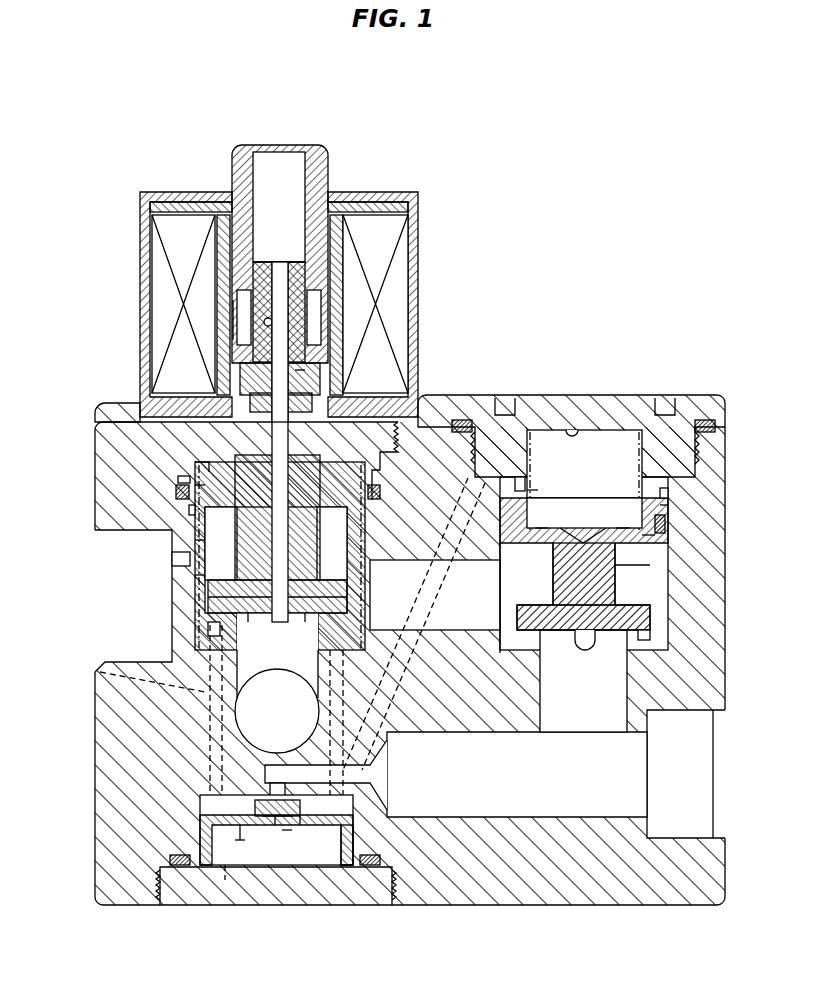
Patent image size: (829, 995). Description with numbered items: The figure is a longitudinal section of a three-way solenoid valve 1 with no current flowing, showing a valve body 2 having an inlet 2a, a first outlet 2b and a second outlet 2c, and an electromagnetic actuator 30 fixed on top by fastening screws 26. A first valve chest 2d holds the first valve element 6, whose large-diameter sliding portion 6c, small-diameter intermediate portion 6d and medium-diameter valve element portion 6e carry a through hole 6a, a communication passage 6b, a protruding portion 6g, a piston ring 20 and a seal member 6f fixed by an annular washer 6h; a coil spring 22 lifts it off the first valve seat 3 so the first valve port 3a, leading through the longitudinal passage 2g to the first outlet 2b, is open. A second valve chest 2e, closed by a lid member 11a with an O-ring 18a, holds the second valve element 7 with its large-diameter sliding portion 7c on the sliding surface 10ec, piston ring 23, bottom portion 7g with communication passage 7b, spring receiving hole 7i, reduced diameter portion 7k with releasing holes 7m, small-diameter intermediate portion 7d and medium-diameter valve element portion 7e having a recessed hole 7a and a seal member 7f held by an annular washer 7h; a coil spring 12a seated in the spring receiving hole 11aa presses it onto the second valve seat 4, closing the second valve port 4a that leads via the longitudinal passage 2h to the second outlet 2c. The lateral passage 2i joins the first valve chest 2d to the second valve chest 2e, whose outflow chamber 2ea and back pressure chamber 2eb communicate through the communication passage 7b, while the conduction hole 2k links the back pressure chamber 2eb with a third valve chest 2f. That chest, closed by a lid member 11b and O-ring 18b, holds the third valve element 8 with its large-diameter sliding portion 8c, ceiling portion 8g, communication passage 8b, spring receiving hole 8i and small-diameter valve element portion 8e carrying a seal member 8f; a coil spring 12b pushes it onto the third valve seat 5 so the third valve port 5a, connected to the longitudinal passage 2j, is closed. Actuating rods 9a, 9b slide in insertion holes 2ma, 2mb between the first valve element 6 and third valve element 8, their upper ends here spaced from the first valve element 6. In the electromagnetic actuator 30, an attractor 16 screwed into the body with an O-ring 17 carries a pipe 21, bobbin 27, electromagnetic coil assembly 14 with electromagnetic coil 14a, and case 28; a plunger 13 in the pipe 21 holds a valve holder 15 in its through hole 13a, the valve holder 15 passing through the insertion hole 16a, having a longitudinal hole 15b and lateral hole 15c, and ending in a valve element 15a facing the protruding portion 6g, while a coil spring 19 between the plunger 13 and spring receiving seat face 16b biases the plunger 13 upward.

The three-way solenoid valve 1 is at (662, 130).
The valve body 2 is at (715, 452).
The inlet 2a is at (170, 650).
The first outlet 2b is at (218, 757).
The second outlet 2c is at (705, 838).
The first valve chest 2d is at (186, 560).
The second valve chest 2e is at (658, 560).
The outflow chamber 2ea is at (628, 566).
The back pressure chamber 2eb is at (600, 458).
The third valve chest 2f is at (232, 806).
The longitudinal passage 2g is at (255, 672).
The longitudinal passage 2h is at (548, 712).
The lateral passage 2i is at (503, 566).
The longitudinal passage 2j is at (287, 777).
The conduction hole 2k is at (447, 590).
The insertion hole 2ma is at (100, 672).
The insertion hole 2mb is at (392, 762).
The first valve seat 3 is at (212, 594).
The first valve port 3a is at (226, 583).
The second valve seat 4 is at (600, 622).
The second valve port 4a is at (553, 602).
The third valve seat 5 is at (262, 795).
The third valve port 5a is at (282, 818).
The first valve element 6 is at (280, 556).
The through hole 6a is at (303, 526).
The communication passage 6b is at (220, 510).
The large-diameter sliding portion 6c is at (200, 488).
The small-diameter intermediate portion 6d is at (200, 542).
The medium-diameter valve element portion 6e is at (205, 577).
The seal member 6f is at (290, 616).
The protruding portion 6g is at (197, 466).
The annular washer 6h is at (250, 622).
The second valve element 7 is at (584, 564).
The recessed hole 7a is at (585, 642).
The communication passage 7b is at (622, 527).
The large-diameter sliding portion 7c is at (668, 512).
The small-diameter intermediate portion 7d is at (662, 617).
The medium-diameter valve element portion 7e is at (652, 630).
The seal member 7f is at (640, 642).
The bottom portion 7g is at (652, 534).
The annular washer 7h is at (620, 640).
The spring receiving hole 7i is at (540, 526).
The reduced diameter portion 7k is at (530, 492).
The releasing holes 7m is at (519, 486).
The third valve element 8 is at (200, 812).
The communication passage 8b is at (240, 842).
The large-diameter sliding portion 8c is at (356, 832).
The small-diameter valve element portion 8e is at (275, 825).
The seal member 8f is at (286, 834).
The ceiling portion 8g is at (300, 825).
The spring receiving hole 8i is at (245, 825).
The actuating rod 9a is at (215, 627).
The actuating rod 9b is at (338, 624).
The sliding surface 10ec is at (668, 496).
The lid member 11a is at (700, 408).
The spring receiving hole 11aa is at (572, 426).
The lid member 11b is at (370, 890).
The coil spring 12a is at (531, 430).
The coil spring 12b is at (224, 870).
The plunger 13 is at (325, 168).
The through hole 13a is at (283, 262).
The electromagnetic coil assembly 14 is at (175, 248).
The electromagnetic coil 14a is at (380, 248).
The valve holder 15 is at (272, 360).
The valve element 15a is at (292, 408).
The longitudinal hole 15b is at (264, 334).
The lateral hole 15c is at (270, 398).
The attractor 16 is at (300, 318).
The insertion hole 16a is at (300, 345).
The spring receiving seat face 16b is at (310, 378).
The O-ring 17 is at (176, 492).
The O-ring 18a is at (715, 426).
The O-ring 18b is at (170, 858).
The coil spring 19 is at (235, 322).
The piston ring 20 is at (178, 481).
The pipe 21 is at (278, 145).
The coil spring 22 is at (189, 512).
The piston ring 23 is at (665, 526).
The fastening screws 26 is at (100, 408).
The bobbin 27 is at (380, 200).
The case 28 is at (195, 192).
The electromagnetic actuator 30 is at (138, 190).